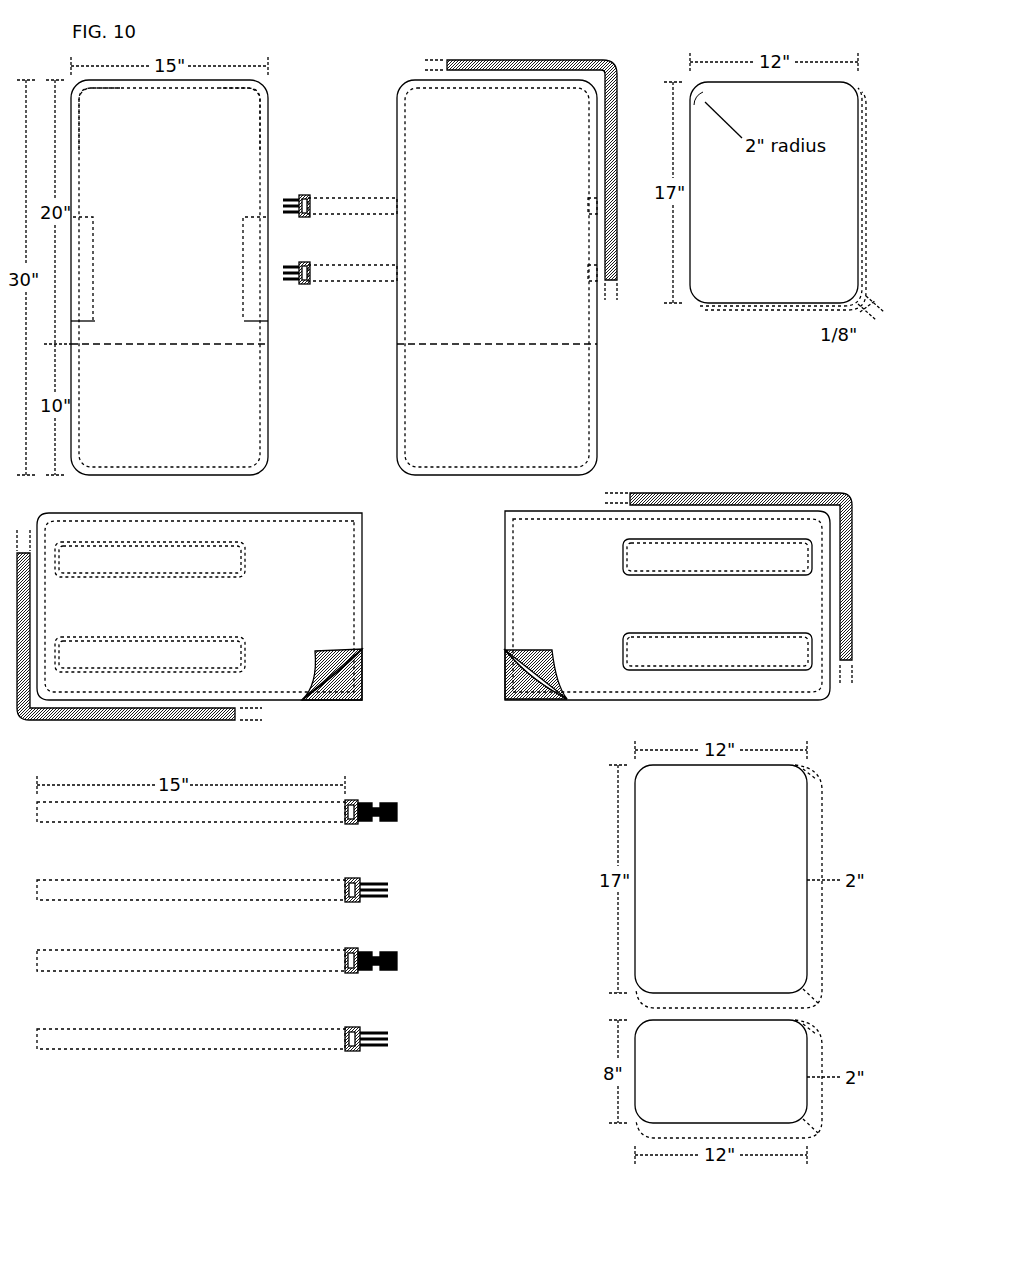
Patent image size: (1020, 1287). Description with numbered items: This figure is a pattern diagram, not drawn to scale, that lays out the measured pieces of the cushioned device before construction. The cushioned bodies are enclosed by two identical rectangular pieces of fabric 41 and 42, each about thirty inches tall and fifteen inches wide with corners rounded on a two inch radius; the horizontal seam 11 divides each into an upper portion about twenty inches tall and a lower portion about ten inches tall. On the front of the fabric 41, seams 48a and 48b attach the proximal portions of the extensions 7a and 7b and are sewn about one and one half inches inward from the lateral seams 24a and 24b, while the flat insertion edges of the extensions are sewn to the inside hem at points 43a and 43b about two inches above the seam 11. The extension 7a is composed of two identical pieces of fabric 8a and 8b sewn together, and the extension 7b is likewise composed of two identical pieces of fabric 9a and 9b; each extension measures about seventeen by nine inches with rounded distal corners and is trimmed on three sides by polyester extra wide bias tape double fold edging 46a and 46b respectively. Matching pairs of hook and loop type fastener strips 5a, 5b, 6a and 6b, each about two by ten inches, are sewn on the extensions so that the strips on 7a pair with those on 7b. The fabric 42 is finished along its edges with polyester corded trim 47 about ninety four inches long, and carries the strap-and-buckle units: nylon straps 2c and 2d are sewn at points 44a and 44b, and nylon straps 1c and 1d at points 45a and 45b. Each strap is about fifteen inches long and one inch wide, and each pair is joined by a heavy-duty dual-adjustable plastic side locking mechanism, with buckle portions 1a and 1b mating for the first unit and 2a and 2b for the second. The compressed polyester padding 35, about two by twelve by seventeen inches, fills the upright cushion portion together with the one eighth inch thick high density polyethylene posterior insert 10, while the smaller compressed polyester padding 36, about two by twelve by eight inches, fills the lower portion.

The high density polyethylene posterior insert 10 is at (778, 196).
The horizontal seam 11 is at (157, 346).
The lateral seam 24a is at (259, 142).
The lateral seam 24b is at (80, 142).
The seam 48a is at (242, 236).
The seam 48b is at (94, 236).
The attachment point 43a is at (262, 318).
The attachment point 43b is at (78, 318).
The rectangular piece of fabric 41 is at (169, 277).
The rectangular piece of fabric 42 is at (497, 277).
The attachment point 44a is at (590, 276).
The attachment point 44b is at (407, 276).
The attachment point 45a is at (590, 206).
The attachment point 45b is at (407, 206).
The polyester corded trim 47 is at (599, 60).
The polyester extra wide bias tape double fold edging 46a is at (660, 492).
The polyester extra wide bias tape double fold edging 46b is at (65, 721).
The extension 7a is at (667, 605).
The extension 7b is at (199, 606).
The hook and loop type fastener strip 5a is at (635, 559).
The hook and loop type fastener strip 5b is at (235, 559).
The hook and loop type fastener strip 6a is at (635, 653).
The hook and loop type fastener strip 6b is at (235, 654).
The piece of fabric 8a is at (520, 686).
The piece of fabric 8b is at (503, 652).
The piece of fabric 9a is at (350, 688).
The piece of fabric 9b is at (352, 657).
The plastic side locking mechanism 1a is at (350, 879).
The plastic side locking mechanism 1b is at (350, 824).
The nylon strap 1c is at (82, 879).
The nylon strap 1d is at (82, 823).
The plastic side locking mechanism 2a is at (350, 1028).
The plastic side locking mechanism 2b is at (350, 973).
The nylon strap 2c is at (82, 1028).
The nylon strap 2d is at (82, 972).
The compressed polyester padding 35 is at (728, 886).
The compressed polyester padding 36 is at (728, 1079).